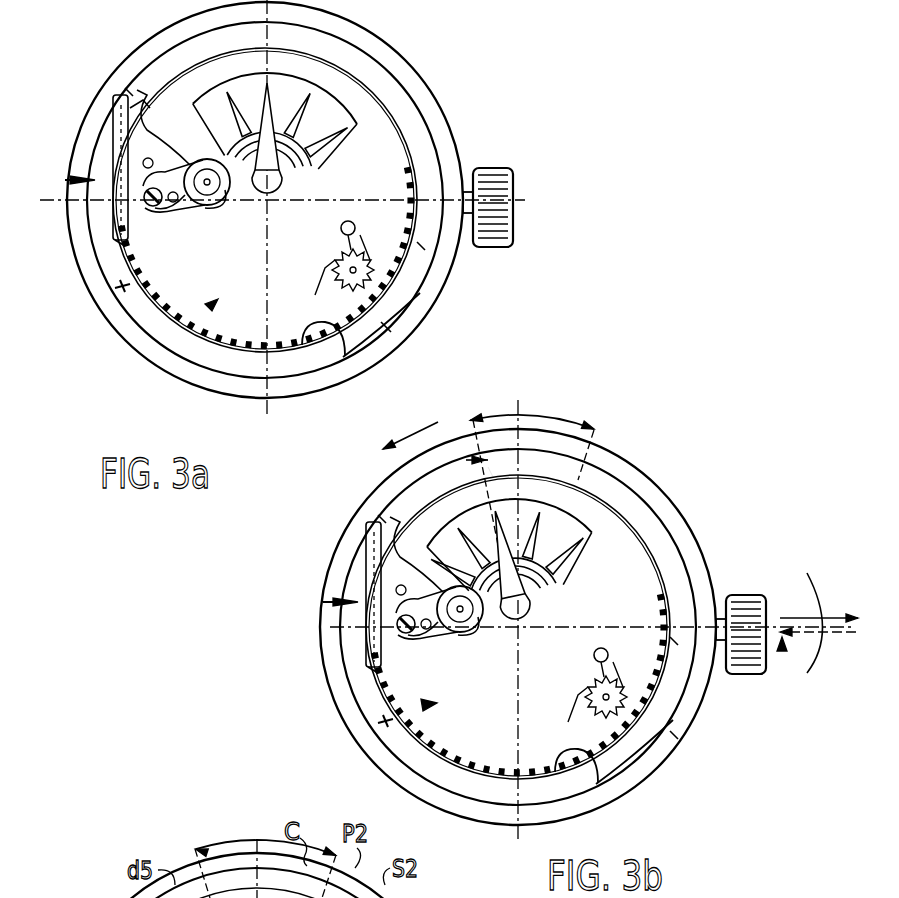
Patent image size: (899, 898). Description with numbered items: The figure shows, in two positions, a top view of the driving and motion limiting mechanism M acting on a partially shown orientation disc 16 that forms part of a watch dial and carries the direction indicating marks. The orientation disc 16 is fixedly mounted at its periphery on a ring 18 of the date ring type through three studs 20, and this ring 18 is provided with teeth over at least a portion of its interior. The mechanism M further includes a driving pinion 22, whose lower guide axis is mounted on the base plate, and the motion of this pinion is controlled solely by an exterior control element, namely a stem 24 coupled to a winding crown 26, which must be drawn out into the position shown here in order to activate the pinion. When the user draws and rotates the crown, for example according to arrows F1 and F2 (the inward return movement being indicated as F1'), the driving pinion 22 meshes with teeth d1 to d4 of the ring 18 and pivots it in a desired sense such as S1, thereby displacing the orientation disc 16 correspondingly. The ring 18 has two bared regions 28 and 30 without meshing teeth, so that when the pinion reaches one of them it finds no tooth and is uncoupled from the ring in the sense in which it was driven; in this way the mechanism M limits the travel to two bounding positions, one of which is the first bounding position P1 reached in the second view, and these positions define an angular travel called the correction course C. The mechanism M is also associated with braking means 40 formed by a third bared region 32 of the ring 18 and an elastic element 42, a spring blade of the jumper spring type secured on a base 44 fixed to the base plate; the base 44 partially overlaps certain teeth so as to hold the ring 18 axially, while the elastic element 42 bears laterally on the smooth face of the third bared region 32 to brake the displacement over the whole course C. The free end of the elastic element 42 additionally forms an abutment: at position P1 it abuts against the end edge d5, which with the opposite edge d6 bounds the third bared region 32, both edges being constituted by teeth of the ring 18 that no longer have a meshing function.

In FIG. 3A, the orientation disc 16 is at (265, 196).
In FIG. 3B, the orientation disc 16 is at (518, 621).
In FIG. 3A, the ring 18 is at (376, 360).
In FIG. 3B, the ring 18 is at (634, 771).
In FIG. 3A, the studs 20 is at (398, 287).
In FIG. 3B, the studs 20 is at (657, 693).
In FIG. 3A, the driving pinion 22 is at (396, 316).
In FIG. 3B, the driving pinion 22 is at (644, 737).
In FIG. 3A, the stem 24 is at (477, 163).
In FIG. 3B, the stem 24 is at (729, 587).
In FIG. 3A, the winding crown 26 is at (525, 211).
In FIG. 3B, the winding crown 26 is at (759, 602).
In FIG. 3A, the bared region 28 is at (317, 374).
In FIG. 3B, the bared region 28 is at (590, 795).
In FIG. 3A, the bared region 30 is at (150, 30).
In FIG. 3B, the bared region 30 is at (518, 627).
In FIG. 3A, the third bared region 32 is at (92, 98).
In FIG. 3A, the braking means 40 is at (112, 185).
In FIG. 3B, the braking means 40 is at (370, 612).
In FIG. 3A, the elastic element 42 is at (80, 167).
In FIG. 3B, the elastic element 42 is at (333, 594).
In FIG. 3A, the base 44 is at (183, 184).
In FIG. 3B, the base 44 is at (377, 609).
In FIG. 3A, the tooth d1 is at (455, 284).
In FIG. 3B, the tooth d1 is at (710, 670).
In FIG. 3A, the tooth d4 is at (399, 358).
In FIG. 3B, the tooth d4 is at (702, 752).
In FIG. 3A, the end edge d5 is at (100, 65).
In FIG. 3B, the end edge d5 is at (342, 541).
In FIG. 3A, the end edge d6 is at (75, 268).
In FIG. 3B, the end edge d6 is at (332, 700).
In FIG. 3A, the driving and motion limiting mechanism M is at (166, 349).
In FIG. 3B, the driving and motion limiting mechanism M is at (383, 739).
In FIG. 3B, the first bounding position P1 is at (529, 470).
In FIG. 3B, the correction course C is at (539, 427).
In FIG. 3B, the rotation sense S1 is at (387, 453).
In FIG. 3B, the arrow F1 is at (819, 602).
In FIG. 3B, the return force F1' is at (821, 655).
In FIG. 3B, the arrow F2 is at (802, 686).